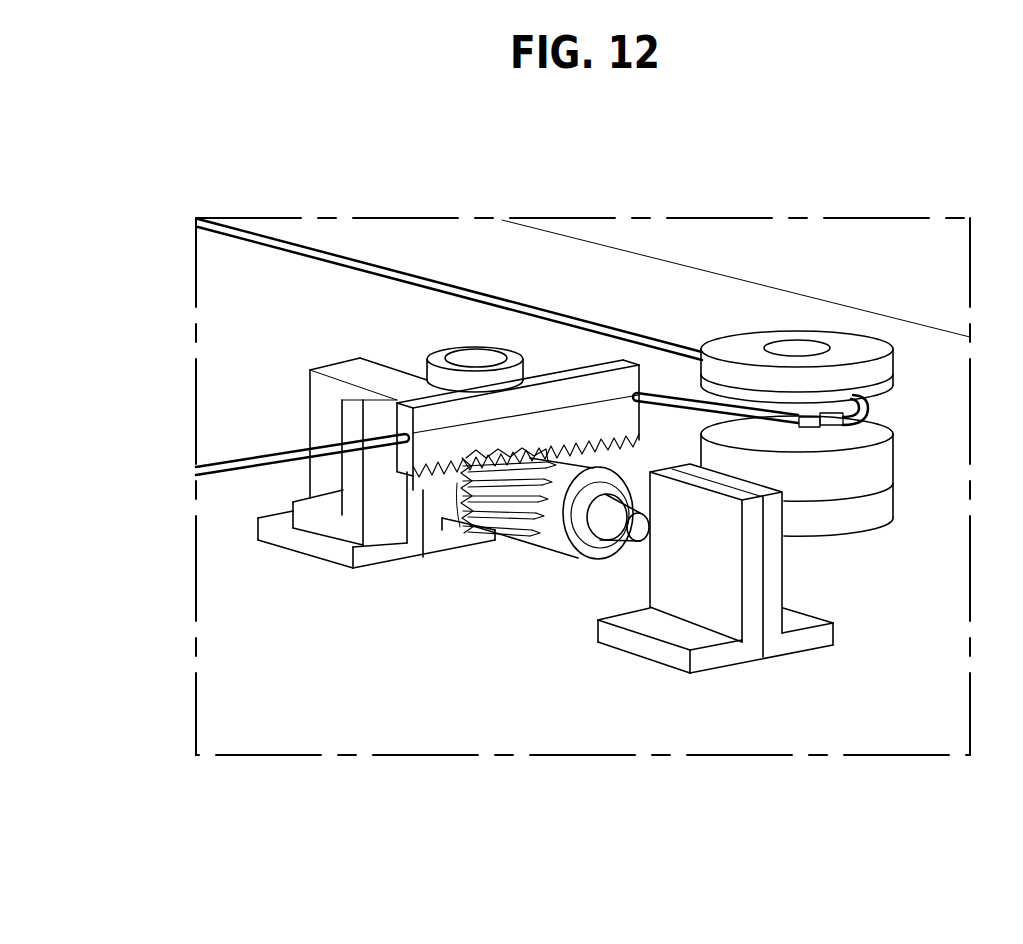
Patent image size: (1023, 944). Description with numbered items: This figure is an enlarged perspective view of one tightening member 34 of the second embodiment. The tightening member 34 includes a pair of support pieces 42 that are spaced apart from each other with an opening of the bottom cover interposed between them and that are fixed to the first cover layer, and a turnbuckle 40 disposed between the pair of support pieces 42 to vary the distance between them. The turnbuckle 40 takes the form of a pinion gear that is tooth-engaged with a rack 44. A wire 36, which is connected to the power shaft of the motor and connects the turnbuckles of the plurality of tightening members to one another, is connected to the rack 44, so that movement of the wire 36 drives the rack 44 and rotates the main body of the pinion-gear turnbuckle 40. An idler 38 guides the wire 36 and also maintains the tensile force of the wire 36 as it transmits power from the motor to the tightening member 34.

The tightening member 34 is at (635, 702).
The wire 36 is at (590, 328).
The idler 38 is at (857, 343).
The turnbuckle 40 is at (553, 527).
The support piece 42 is at (783, 643).
The rack 44 is at (432, 447).